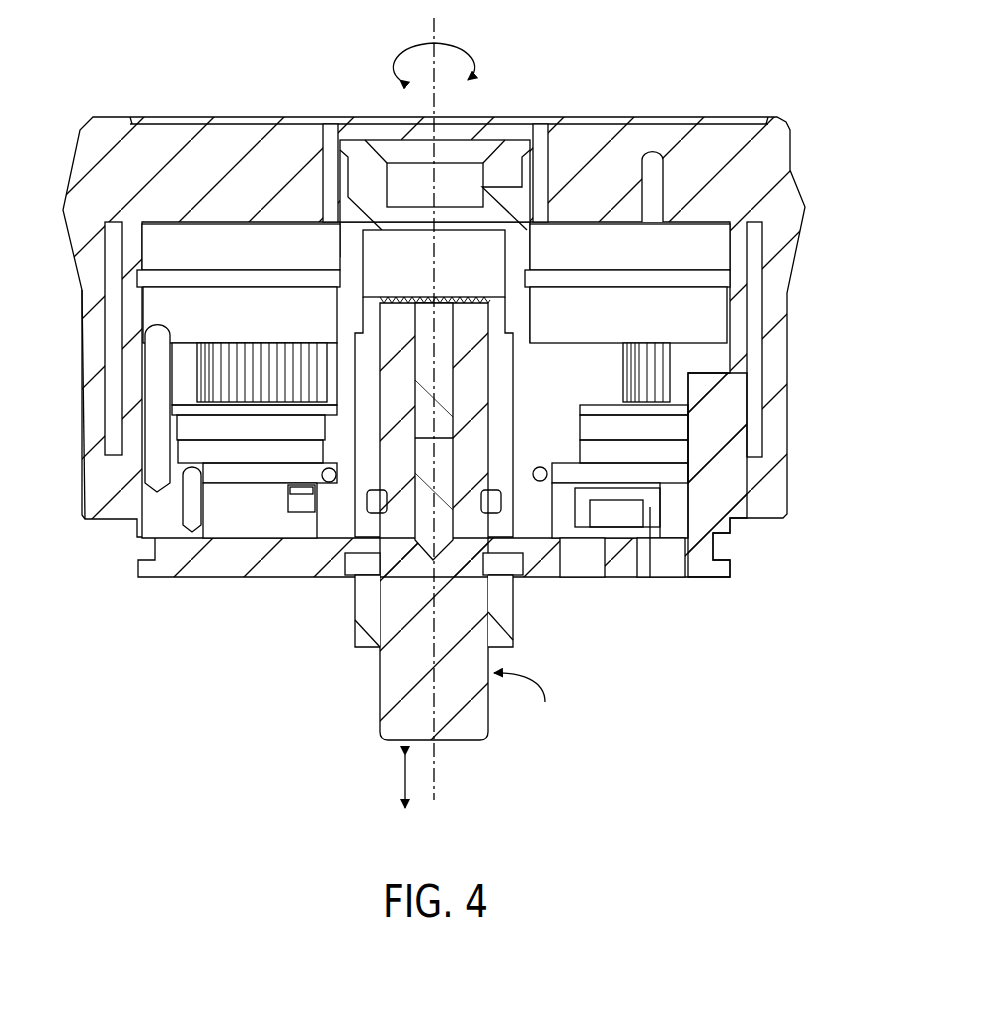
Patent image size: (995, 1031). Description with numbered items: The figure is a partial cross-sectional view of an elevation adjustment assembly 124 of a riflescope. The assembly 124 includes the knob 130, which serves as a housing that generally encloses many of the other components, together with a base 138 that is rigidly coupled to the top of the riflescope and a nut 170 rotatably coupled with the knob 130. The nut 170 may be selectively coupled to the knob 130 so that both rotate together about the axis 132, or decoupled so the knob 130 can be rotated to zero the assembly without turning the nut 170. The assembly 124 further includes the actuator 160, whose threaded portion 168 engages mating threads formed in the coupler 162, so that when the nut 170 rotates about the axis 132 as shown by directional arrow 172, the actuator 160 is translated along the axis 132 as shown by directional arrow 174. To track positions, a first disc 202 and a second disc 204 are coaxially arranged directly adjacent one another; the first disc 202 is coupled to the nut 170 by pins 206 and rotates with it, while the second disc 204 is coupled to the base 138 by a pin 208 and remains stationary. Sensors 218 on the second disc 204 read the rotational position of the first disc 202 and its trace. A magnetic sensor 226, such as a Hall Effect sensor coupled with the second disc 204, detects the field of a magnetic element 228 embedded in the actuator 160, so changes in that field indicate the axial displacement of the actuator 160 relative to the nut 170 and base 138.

The elevation adjustment assembly 124 is at (660, 76).
The knob 130 is at (95, 495).
The base 138 is at (720, 510).
The nut 170 is at (545, 383).
The pins 206 is at (612, 428).
The first disc 202 is at (658, 448).
The second disc 204 is at (658, 473).
The magnetic sensor 226 is at (298, 502).
The sensors 218 is at (650, 577).
The pin 208 is at (190, 508).
The actuator 160 is at (390, 690).
The magnetic element 228 is at (423, 550).
The coupler 162 is at (500, 612).
The axis 132 is at (435, 33).
The directional arrow 172 is at (412, 50).
The directional arrow 174 is at (400, 785).
The threaded portion 168 is at (525, 702).